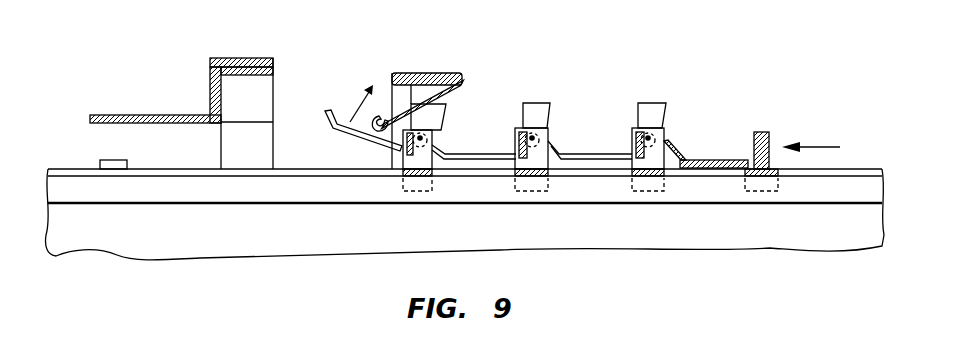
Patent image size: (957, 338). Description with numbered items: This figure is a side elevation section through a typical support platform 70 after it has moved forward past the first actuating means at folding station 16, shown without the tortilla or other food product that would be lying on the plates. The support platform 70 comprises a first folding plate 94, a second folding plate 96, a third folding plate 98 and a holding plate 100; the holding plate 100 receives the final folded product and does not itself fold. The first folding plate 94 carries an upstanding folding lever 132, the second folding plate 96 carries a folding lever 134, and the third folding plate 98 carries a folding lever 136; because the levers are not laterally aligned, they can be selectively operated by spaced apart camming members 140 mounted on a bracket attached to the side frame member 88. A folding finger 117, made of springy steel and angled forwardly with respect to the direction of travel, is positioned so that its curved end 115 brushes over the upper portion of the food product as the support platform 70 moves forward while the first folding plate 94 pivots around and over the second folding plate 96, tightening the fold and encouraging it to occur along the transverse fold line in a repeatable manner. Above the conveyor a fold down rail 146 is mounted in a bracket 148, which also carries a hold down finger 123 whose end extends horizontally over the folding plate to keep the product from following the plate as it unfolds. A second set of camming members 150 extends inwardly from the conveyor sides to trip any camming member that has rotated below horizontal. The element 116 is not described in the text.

The folding station 16 is at (621, 106).
The support platform 70 is at (529, 197).
The side frame member 88 is at (838, 241).
The first folding plate 94 is at (333, 137).
The second folding plate 96 is at (484, 153).
The third folding plate 98 is at (601, 154).
The holding plate 100 is at (722, 159).
The curved end 115 is at (372, 144).
The stop block 116 is at (758, 132).
The folding finger 117 is at (396, 74).
The hold down finger 123 is at (155, 114).
The folding lever 132 is at (448, 104).
The folding lever 134 is at (537, 103).
The folding lever 136 is at (646, 103).
The camming member 140 is at (391, 73).
The fold down rail 146 is at (273, 87).
The bracket 148 is at (220, 145).
The camming member 150 is at (112, 160).